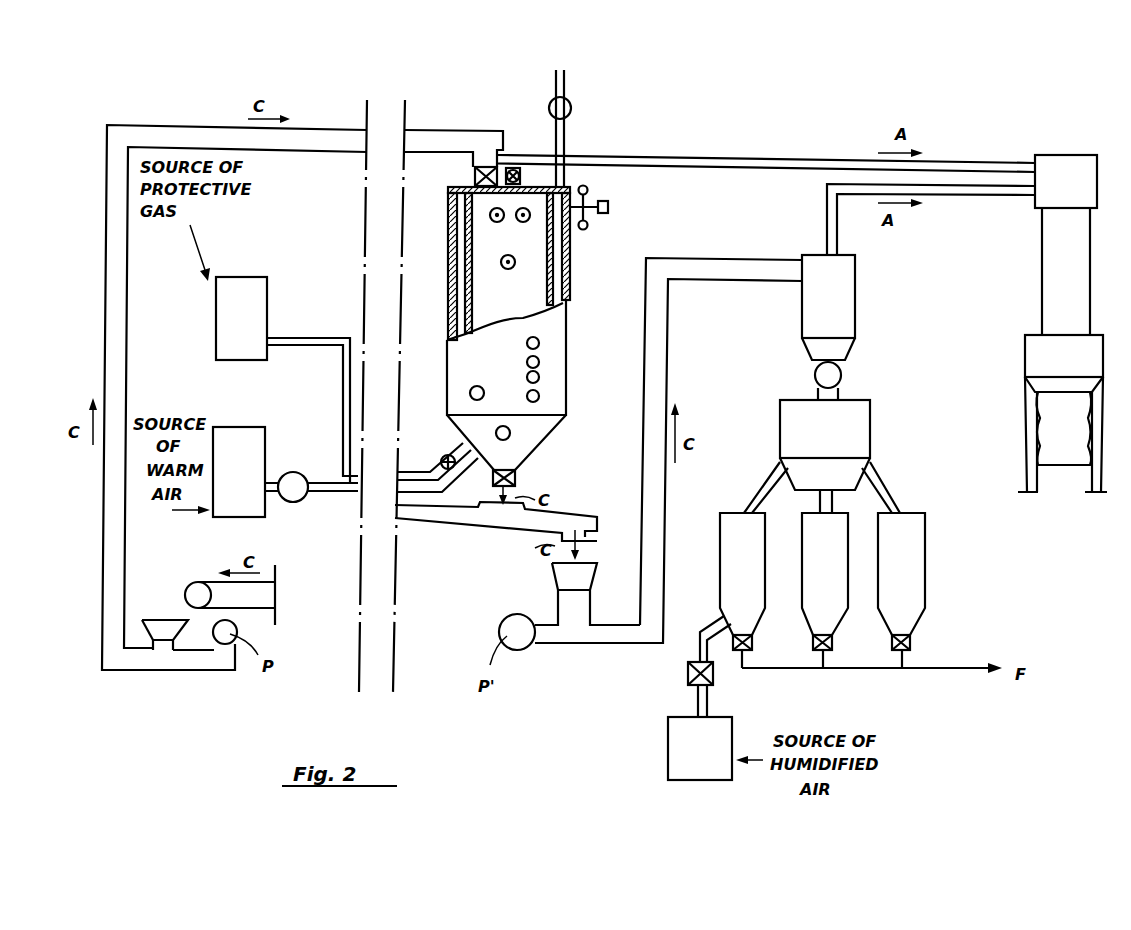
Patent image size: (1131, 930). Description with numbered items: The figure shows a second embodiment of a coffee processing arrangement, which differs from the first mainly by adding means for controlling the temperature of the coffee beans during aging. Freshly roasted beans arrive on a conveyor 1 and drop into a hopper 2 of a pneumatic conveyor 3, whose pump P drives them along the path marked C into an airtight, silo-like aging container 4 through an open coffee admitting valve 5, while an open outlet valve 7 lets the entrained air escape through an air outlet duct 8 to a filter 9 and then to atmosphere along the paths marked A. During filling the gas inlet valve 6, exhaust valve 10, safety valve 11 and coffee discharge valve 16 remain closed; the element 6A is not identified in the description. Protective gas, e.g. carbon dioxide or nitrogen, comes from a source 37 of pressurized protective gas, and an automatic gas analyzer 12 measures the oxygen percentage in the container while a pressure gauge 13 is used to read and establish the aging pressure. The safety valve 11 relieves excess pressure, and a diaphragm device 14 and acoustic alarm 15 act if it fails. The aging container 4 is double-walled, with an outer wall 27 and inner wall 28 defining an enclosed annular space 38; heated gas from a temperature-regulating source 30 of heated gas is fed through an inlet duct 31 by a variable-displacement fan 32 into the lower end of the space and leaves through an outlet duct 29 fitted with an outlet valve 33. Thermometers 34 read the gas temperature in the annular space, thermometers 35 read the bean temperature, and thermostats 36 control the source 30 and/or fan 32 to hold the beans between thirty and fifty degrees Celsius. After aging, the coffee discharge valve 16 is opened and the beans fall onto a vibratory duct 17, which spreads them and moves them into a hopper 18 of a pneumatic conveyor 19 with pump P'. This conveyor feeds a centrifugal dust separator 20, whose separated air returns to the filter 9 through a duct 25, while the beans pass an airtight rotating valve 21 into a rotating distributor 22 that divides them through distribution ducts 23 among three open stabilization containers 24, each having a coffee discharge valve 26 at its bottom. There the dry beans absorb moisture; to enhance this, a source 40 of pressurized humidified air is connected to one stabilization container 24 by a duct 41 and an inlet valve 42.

The conveyor 1 is at (208, 582).
The hopper 2 is at (160, 625).
The pneumatic conveyor 3 is at (448, 128).
The aging container 4 is at (486, 328).
The coffee admitting valve 5 is at (470, 172).
The gas inlet valve 6 is at (448, 455).
The warm air pipe 6A is at (416, 472).
The outlet valve 7 is at (522, 176).
The air outlet duct 8 is at (790, 160).
The filter 9 is at (1022, 325).
The exhaust valve 10 is at (588, 190).
The safety valve 11 is at (590, 225).
The automatic gas analyzer 12 is at (608, 207).
The pressure gauge 13 is at (540, 343).
The diaphragm device 14 is at (540, 362).
The acoustic alarm 15 is at (540, 377).
The coffee discharge valve 16 is at (516, 478).
The vibratory duct 17 is at (530, 525).
The hopper 18 is at (600, 570).
The pneumatic conveyor 19 is at (722, 256).
The centrifugal dust separator 20 is at (838, 292).
The airtight rotating valve 21 is at (842, 368).
The rotating distributor 22 is at (853, 437).
The distribution duct 23 is at (888, 498).
The stabilization container 24 is at (912, 552).
The duct 25 is at (990, 190).
The coffee discharge valve 26 is at (910, 643).
The outer wall 27 is at (455, 288).
The inner wall 28 is at (460, 210).
The outlet duct 29 is at (565, 142).
The source of heated gas 30 is at (237, 438).
The inlet duct 31 is at (335, 495).
The variable-displacement fan 32 is at (297, 483).
The outlet valve 33 is at (572, 106).
The thermometer 34 is at (502, 221).
The thermometer 35 is at (530, 221).
The thermostat 36 is at (515, 262).
The source of pressurized protective gas 37 is at (237, 288).
The annular space 38 is at (455, 256).
The source of pressurized humidified air 40 is at (676, 740).
The duct 41 is at (712, 623).
The inlet valve 42 is at (713, 675).